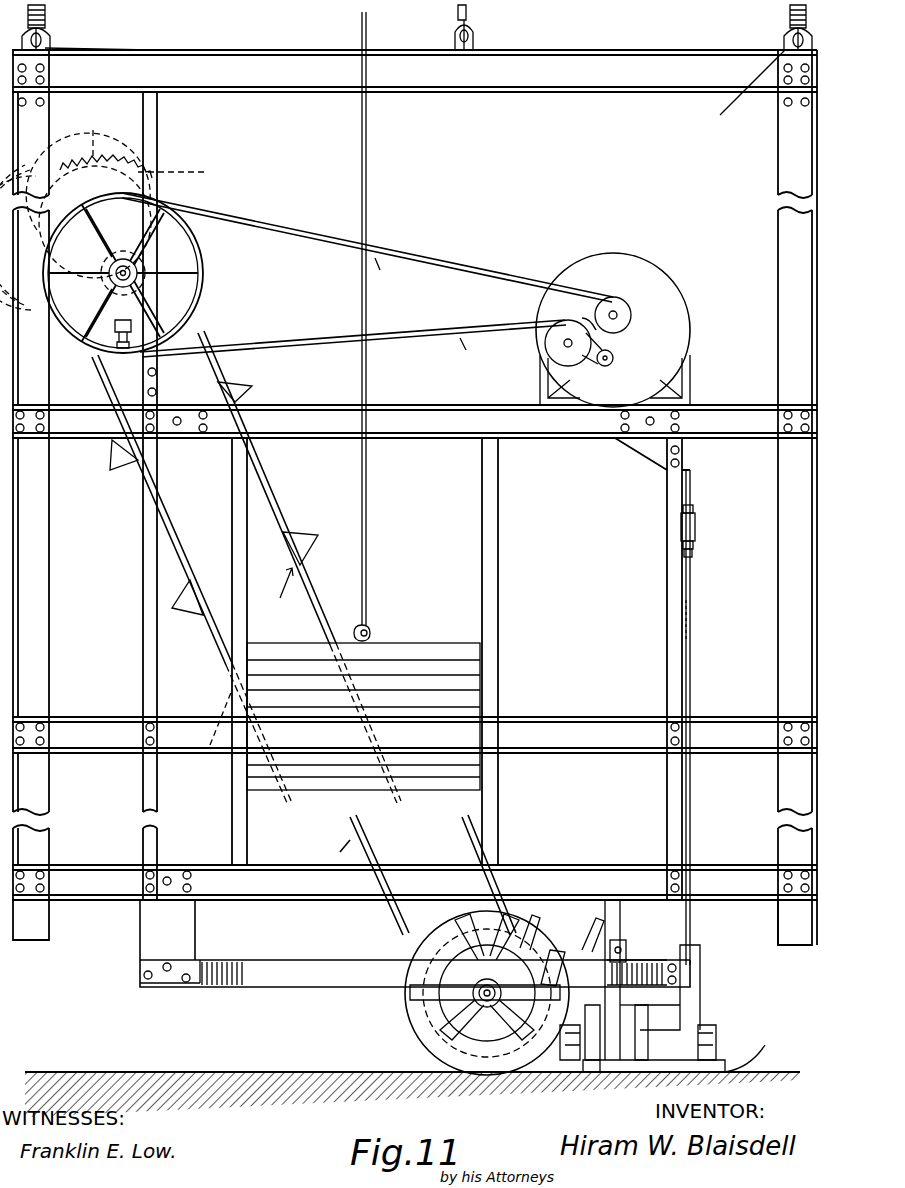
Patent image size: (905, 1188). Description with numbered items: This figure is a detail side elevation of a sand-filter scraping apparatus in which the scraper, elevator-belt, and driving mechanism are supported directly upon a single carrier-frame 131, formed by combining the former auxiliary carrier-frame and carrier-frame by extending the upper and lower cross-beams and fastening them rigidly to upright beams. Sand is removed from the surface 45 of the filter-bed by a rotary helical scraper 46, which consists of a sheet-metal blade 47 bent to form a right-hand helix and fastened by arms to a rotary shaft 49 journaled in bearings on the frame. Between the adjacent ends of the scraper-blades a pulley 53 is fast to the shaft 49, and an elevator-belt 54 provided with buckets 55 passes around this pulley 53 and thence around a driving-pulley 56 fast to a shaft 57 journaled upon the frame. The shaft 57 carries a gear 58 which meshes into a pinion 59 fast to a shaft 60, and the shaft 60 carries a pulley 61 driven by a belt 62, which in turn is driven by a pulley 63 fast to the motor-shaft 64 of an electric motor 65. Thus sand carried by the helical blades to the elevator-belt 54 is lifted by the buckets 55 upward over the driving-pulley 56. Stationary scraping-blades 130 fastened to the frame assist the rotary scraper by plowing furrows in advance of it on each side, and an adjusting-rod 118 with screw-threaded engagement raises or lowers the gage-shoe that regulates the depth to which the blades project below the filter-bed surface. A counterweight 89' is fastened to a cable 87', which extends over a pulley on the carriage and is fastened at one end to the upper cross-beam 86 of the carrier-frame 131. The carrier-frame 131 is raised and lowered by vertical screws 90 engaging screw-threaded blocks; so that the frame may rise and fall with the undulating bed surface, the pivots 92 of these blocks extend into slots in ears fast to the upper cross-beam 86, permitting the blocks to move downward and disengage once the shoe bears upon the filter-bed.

The surface of the filter-bed 45 is at (210, 1072).
The rotary helical scraper 46 is at (449, 993).
The sheet-metal blade 47 is at (430, 1023).
The rotary shaft 49 is at (487, 990).
The pulley 53 is at (545, 945).
The elevator-belt 54 is at (397, 630).
The buckets 55 is at (305, 548).
The driving-pulley 56 is at (190, 179).
The shaft 57 is at (108, 108).
The gear 58 is at (148, 160).
The pinion 59 is at (200, 235).
The shaft 60 is at (138, 272).
The pulley 61 is at (205, 322).
The belt 62 is at (437, 316).
The pulley 63 is at (632, 318).
The motor-shaft 64 is at (618, 312).
The electric motor 65 is at (660, 350).
The upper cross-beam 86 is at (515, 90).
The cable 87' is at (444, 315).
The counterweight 89' is at (404, 716).
The vertical screws 90 is at (48, 18).
The pivots 92 is at (50, 45).
The adjusting-rod 118 is at (692, 965).
The stationary scraping-blades 130 is at (613, 1050).
The carrier-frame 131 is at (714, 552).